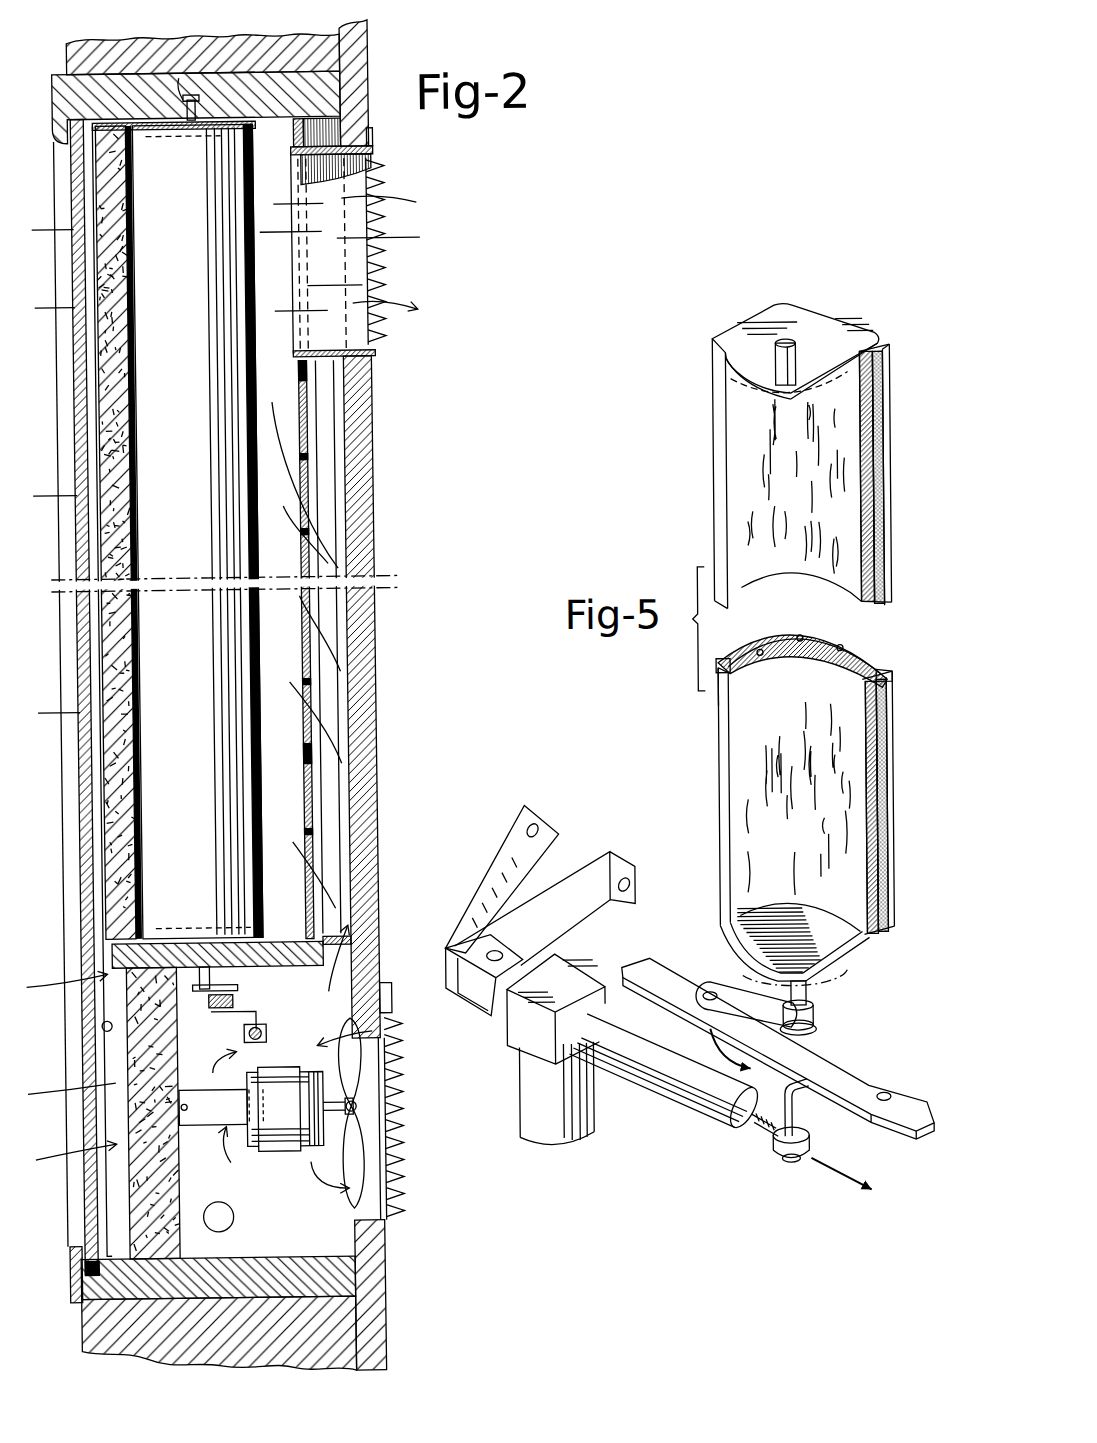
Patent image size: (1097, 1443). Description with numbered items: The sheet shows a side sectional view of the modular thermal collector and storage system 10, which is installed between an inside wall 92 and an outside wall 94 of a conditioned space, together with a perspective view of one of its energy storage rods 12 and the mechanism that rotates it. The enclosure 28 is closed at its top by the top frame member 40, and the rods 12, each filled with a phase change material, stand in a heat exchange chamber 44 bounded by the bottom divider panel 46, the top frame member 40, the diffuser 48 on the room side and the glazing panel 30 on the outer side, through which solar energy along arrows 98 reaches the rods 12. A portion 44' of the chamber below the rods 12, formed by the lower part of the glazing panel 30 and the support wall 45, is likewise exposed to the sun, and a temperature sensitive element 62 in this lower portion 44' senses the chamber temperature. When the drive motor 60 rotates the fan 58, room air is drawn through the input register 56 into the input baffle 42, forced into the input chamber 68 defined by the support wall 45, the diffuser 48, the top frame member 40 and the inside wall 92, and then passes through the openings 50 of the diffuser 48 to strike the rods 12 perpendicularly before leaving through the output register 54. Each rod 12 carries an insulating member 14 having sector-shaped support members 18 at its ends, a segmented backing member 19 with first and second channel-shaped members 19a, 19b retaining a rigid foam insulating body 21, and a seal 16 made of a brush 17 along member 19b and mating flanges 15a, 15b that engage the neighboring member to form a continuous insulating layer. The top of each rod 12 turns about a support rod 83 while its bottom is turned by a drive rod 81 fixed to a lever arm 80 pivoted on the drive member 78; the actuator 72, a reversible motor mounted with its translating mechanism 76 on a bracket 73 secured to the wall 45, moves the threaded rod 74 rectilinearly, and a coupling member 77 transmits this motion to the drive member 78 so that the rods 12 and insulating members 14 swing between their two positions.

In FIG. 2, the modular thermal collector and storage system 10 is at (412, 429).
In FIG. 2, the energy storage rod 12 is at (250, 176).
In FIG. 2, the insulating member 14 is at (130, 447).
In FIG. 5, the insulating member 14 is at (716, 736).
In FIG. 5, the mating flange 15a is at (886, 348).
In FIG. 5, the mating flange 15b is at (730, 652).
In FIG. 5, the seal 16 is at (887, 784).
In FIG. 5, the brush 17 is at (877, 412).
In FIG. 5, the support member 18 is at (735, 340).
In FIG. 5, the backing member 19 is at (797, 634).
In FIG. 5, the first channel-shaped member 19a is at (718, 703).
In FIG. 5, the second channel-shaped member 19b is at (865, 670).
In FIG. 5, the insulating body 21 is at (763, 642).
In FIG. 2, the enclosure 28 is at (49, 905).
In FIG. 2, the glazing panel 30 is at (71, 393).
In FIG. 2, the top frame member 40 is at (273, 84).
In FIG. 2, the input baffle 42 is at (316, 1039).
In FIG. 2, the heat exchange chamber 44 is at (305, 696).
In FIG. 2, the heat exchange chamber portion 44' is at (52, 1259).
In FIG. 2, the support wall 45 is at (169, 1053).
In FIG. 2, the bottom divider panel 46 is at (278, 938).
In FIG. 2, the diffuser 48 is at (305, 492).
In FIG. 2, the openings 50 is at (300, 745).
In FIG. 2, the output register 54 is at (372, 143).
In FIG. 2, the input register 56 is at (390, 1118).
In FIG. 2, the fan 58 is at (337, 1178).
In FIG. 2, the drive motor 60 is at (277, 1153).
In FIG. 2, the temperature sensitive element 62 is at (88, 1023).
In FIG. 2, the input chamber 68 is at (340, 814).
In FIG. 5, the actuator 72 is at (592, 1112).
In FIG. 5, the bracket 73 is at (478, 905).
In FIG. 5, the threaded rod 74 is at (760, 1142).
In FIG. 5, the translating mechanism 76 is at (573, 980).
In FIG. 5, the coupling member 77 is at (795, 1118).
In FIG. 5, the drive member 78 is at (805, 1058).
In FIG. 2, the lever arm 80 is at (247, 988).
In FIG. 5, the lever arm 80 is at (722, 986).
In FIG. 2, the drive rod 81 is at (247, 974).
In FIG. 5, the drive rod 81 is at (806, 998).
In FIG. 2, the support rod 83 is at (180, 96).
In FIG. 5, the support rod 83 is at (803, 348).
In FIG. 2, the inside wall 92 is at (368, 33).
In FIG. 2, the outside wall 94 is at (70, 42).
In FIG. 2, the arrows 98 is at (35, 1079).